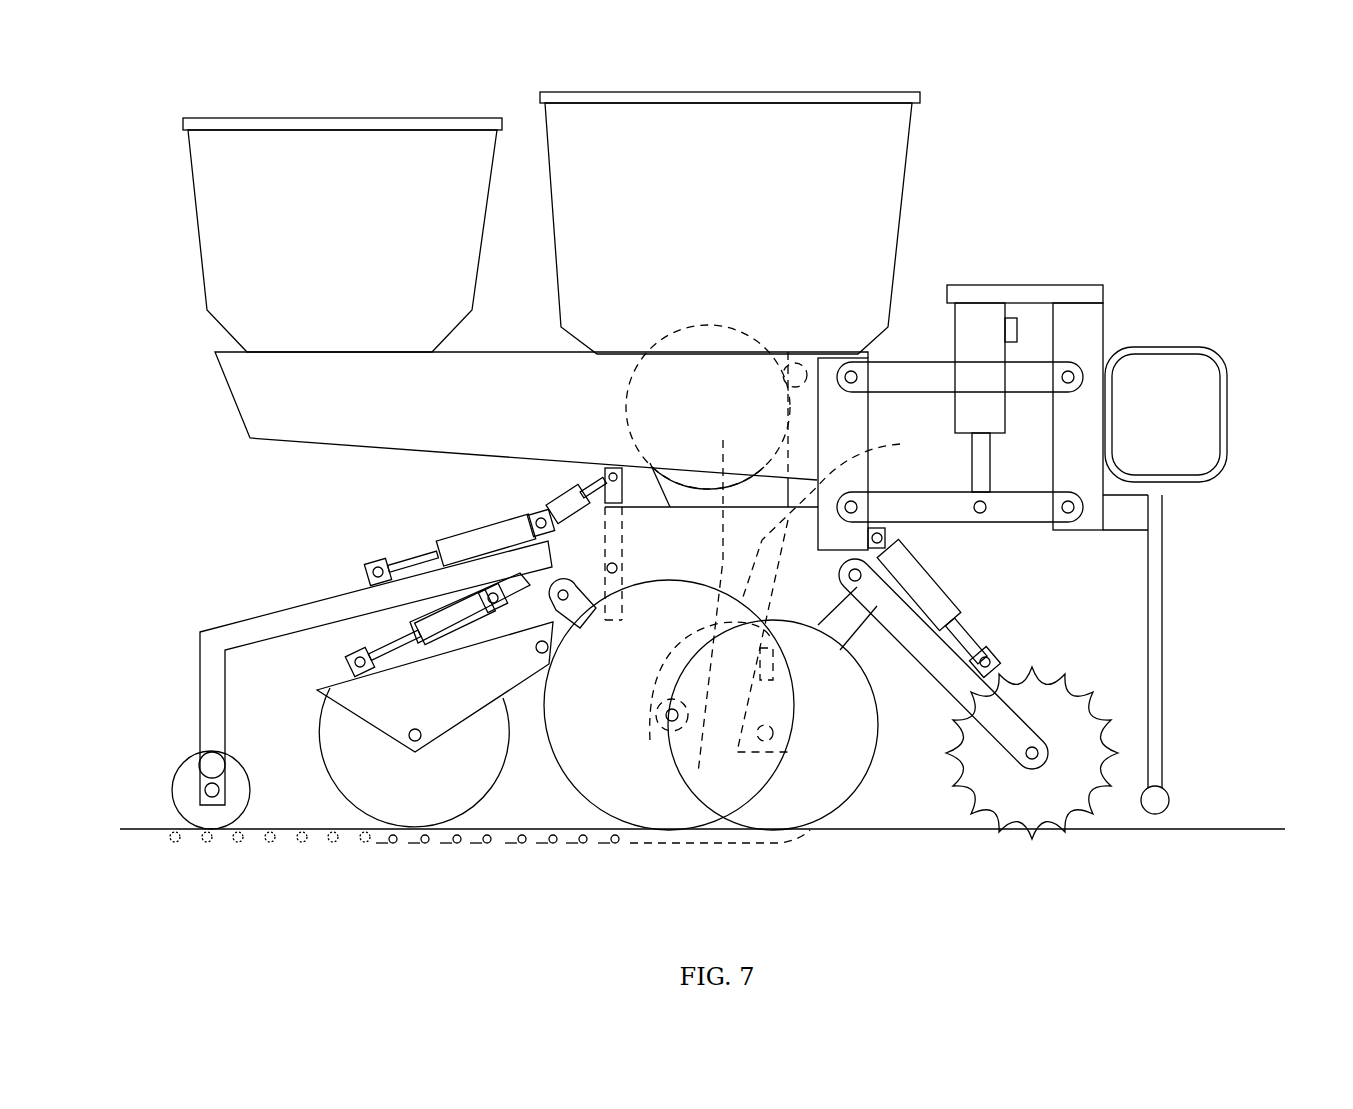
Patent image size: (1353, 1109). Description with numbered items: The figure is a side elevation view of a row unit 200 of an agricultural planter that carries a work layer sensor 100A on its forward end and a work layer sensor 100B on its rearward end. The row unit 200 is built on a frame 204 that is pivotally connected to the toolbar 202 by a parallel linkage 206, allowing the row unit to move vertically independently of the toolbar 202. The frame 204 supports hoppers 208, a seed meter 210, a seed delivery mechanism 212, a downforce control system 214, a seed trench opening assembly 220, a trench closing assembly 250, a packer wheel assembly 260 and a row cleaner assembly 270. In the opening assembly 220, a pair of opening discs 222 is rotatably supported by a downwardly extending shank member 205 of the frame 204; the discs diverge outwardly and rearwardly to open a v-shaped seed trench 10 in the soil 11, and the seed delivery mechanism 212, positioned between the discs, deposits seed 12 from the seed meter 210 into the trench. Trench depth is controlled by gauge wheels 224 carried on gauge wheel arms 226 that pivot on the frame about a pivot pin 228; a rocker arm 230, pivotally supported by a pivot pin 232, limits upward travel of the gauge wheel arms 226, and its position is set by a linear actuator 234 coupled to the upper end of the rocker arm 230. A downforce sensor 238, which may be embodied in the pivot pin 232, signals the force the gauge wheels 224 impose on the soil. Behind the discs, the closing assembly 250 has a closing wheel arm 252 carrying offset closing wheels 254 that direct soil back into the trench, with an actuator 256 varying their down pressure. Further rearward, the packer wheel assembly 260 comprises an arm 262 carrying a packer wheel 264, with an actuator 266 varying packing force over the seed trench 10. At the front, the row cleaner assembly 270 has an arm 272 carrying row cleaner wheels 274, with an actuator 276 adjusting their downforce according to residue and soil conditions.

The row unit 200 is at (1195, 158).
The toolbar 202 is at (1222, 407).
The frame 204 is at (272, 405).
The shank member 205 is at (903, 568).
The parallel linkage 206 is at (902, 370).
The hopper 208 is at (305, 241).
The seed meter 210 is at (665, 390).
The seed delivery mechanism 212 is at (923, 529).
The downforce control system 214 is at (980, 318).
The seed trench opening assembly 220 is at (792, 880).
The opening disc 222 is at (840, 777).
The gauge wheel 224 is at (587, 762).
The gauge wheel arm 226 is at (669, 705).
The pivot pin 228 is at (563, 583).
The rocker arm 230 is at (622, 495).
The pivot pin 232 is at (616, 566).
The linear actuator 234 is at (590, 493).
The downforce sensor 238 is at (618, 568).
The trench closing assembly 250 is at (298, 728).
The closing wheel arm 252 is at (387, 708).
The closing wheel 254 is at (390, 785).
The actuator 256 is at (413, 637).
The packer wheel assembly 260 is at (168, 652).
The arm 262 is at (240, 630).
The packer wheel 264 is at (185, 790).
The actuator 266 is at (445, 540).
The row cleaner assembly 270 is at (1099, 670).
The arm 272 is at (922, 645).
The row cleaner wheel 274 is at (1047, 795).
The actuator 276 is at (937, 602).
The work layer sensor 100A is at (1163, 650).
The work layer sensor 100B is at (208, 760).
The seed trench 10 is at (665, 800).
The soil 11 is at (1210, 828).
The seed 12 is at (487, 845).